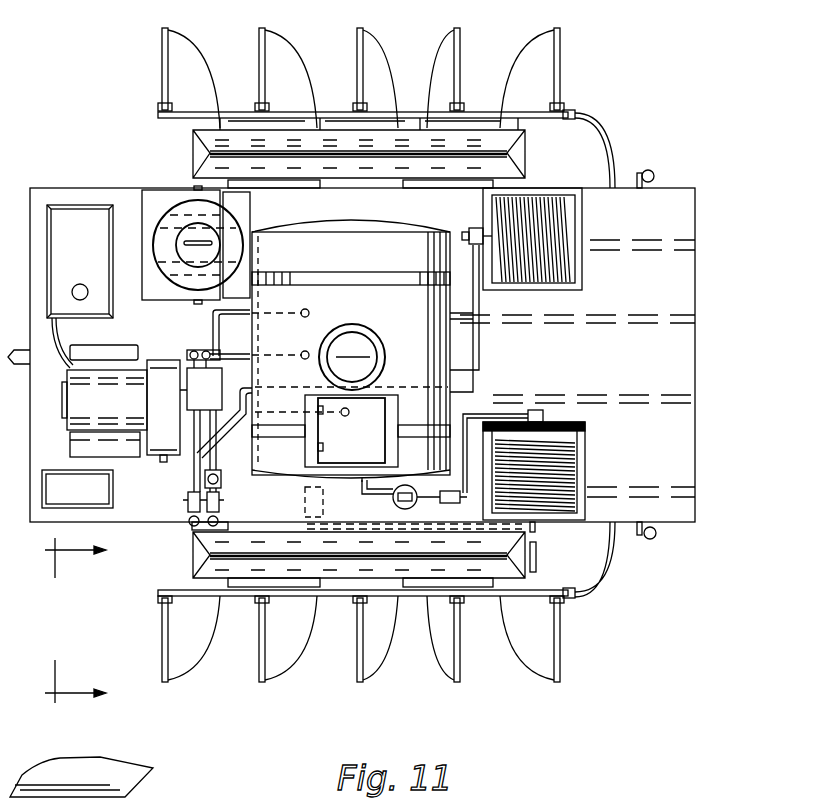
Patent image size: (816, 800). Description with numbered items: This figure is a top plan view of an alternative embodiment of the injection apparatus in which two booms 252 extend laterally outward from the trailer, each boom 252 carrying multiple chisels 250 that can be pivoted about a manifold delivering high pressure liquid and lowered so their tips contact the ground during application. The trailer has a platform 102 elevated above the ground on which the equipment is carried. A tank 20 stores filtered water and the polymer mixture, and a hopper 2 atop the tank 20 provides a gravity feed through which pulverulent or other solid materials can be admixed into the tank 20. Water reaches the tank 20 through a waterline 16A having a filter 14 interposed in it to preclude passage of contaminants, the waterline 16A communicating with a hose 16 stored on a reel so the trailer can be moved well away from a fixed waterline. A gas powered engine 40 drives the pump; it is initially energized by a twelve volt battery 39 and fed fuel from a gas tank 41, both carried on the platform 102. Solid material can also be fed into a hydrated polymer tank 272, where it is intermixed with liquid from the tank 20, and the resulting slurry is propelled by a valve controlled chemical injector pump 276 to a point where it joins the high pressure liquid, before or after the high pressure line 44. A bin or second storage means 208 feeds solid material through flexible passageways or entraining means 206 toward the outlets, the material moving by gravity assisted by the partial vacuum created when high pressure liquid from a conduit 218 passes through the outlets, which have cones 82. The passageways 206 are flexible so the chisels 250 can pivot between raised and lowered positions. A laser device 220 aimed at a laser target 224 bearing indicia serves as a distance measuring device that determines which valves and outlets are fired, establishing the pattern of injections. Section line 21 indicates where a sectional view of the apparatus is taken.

The hopper 2 is at (358, 450).
The filter 14 is at (413, 506).
The hose 16 is at (578, 455).
The waterline 16A is at (374, 499).
The tank 20 is at (400, 312).
The section line 21 is at (91, 622).
The battery 39 is at (87, 503).
The engine 40 is at (118, 410).
The gas tank 41 is at (93, 255).
The high pressure line 44 is at (571, 226).
The cone 82 is at (647, 170).
The platform 102 is at (697, 290).
The passageway or entraining means 206 is at (540, 27).
The bin or second storage means 208 is at (518, 152).
The conduit 218 is at (608, 140).
The laser device 220 is at (305, 503).
The laser target 224 is at (335, 528).
The chisel 250 is at (562, 52).
The boom 252 is at (237, 112).
The hydrated polymer tank 272 is at (177, 225).
The chemical injector pump 276 is at (195, 408).